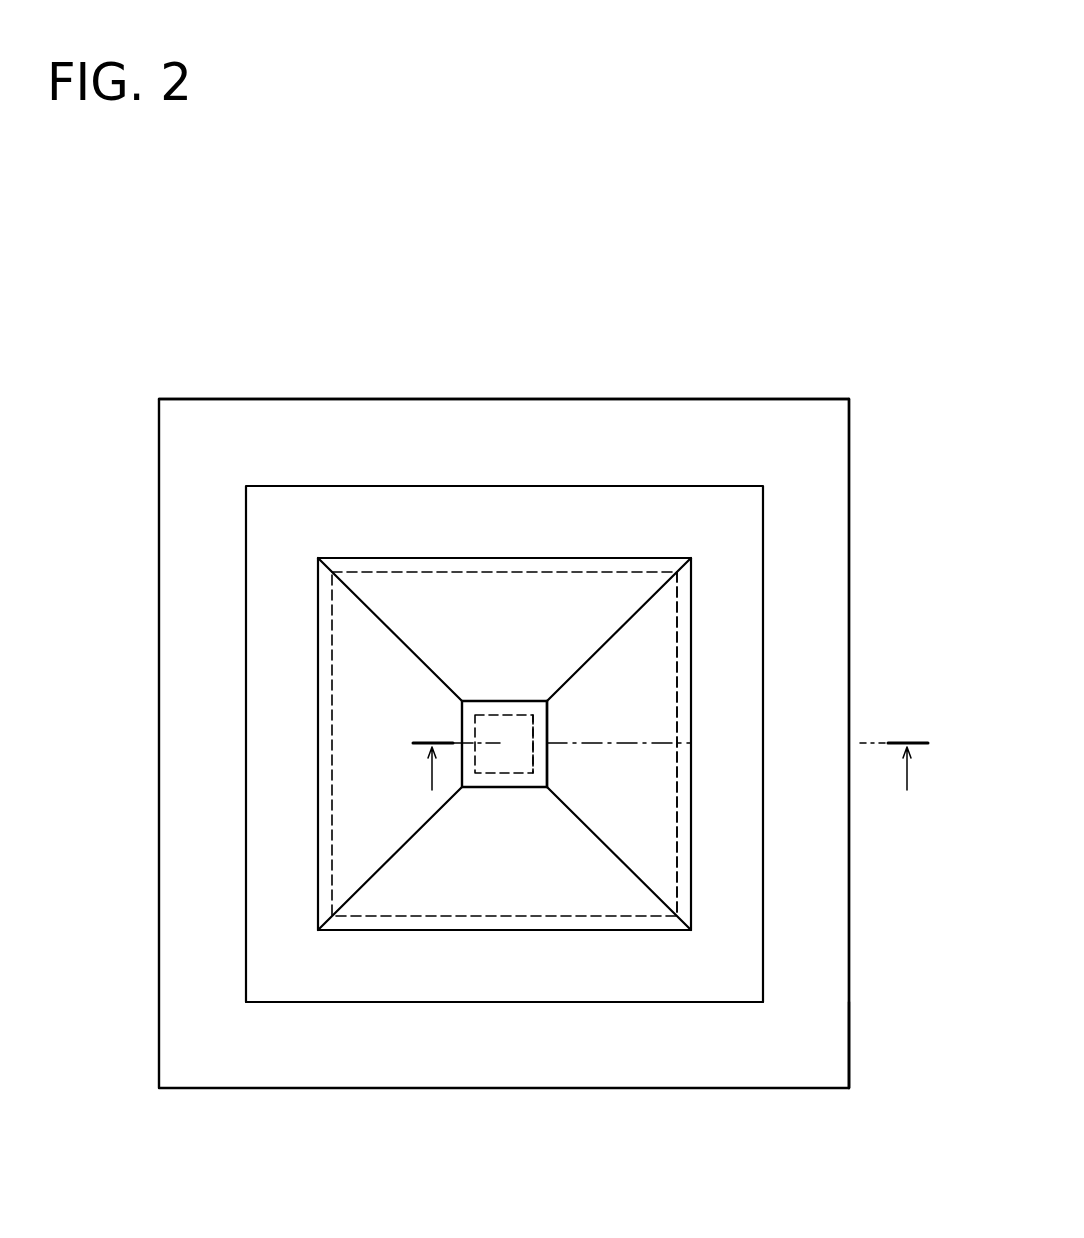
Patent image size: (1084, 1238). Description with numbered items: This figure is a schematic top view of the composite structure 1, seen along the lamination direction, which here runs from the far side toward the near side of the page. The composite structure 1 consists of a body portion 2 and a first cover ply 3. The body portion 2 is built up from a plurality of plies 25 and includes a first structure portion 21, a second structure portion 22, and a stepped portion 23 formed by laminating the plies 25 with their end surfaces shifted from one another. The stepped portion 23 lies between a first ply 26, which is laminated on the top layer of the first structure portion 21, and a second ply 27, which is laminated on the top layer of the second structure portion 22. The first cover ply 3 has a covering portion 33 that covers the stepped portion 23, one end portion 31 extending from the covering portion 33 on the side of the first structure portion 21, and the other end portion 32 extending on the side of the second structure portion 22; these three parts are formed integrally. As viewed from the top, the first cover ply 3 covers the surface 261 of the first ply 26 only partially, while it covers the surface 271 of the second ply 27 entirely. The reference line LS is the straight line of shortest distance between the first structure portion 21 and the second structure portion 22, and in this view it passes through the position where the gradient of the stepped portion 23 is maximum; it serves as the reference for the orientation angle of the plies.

The composite structure 1 is at (252, 231).
The body portion 2 is at (214, 390).
The first cover ply 3 is at (288, 478).
The first structure portion 21 is at (710, 468).
The second structure portion 22 is at (497, 735).
The stepped portion 23 is at (603, 607).
The plies 25 is at (688, 623).
The first ply 26 is at (849, 944).
The surface of the first ply 261 is at (800, 1034).
The second ply 27 is at (540, 690).
The surface of the second ply 271 is at (543, 714).
The one end portion 31 is at (710, 974).
The other end portion 32 is at (503, 777).
The covering portion 33 is at (604, 900).
The reference line LS is at (650, 743).